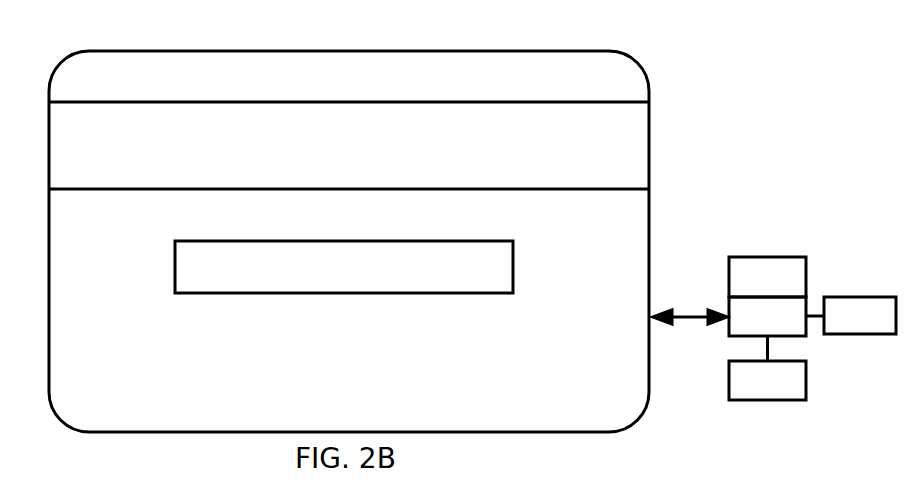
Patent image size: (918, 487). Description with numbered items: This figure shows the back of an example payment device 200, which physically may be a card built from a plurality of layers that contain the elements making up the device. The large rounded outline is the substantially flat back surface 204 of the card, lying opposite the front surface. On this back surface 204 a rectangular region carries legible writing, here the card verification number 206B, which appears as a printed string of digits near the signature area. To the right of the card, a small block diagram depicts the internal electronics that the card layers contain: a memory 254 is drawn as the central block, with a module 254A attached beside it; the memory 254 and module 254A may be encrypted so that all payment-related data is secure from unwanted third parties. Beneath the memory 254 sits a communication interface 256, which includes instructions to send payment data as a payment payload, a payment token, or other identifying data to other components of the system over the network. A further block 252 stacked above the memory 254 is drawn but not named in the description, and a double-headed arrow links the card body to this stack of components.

The payment device 200 is at (161, 55).
The back surface 204 is at (628, 229).
The card verification number 206B is at (482, 241).
The communication interface 252 is at (767, 277).
The memory 254 is at (776, 329).
The module 254A is at (860, 315).
The communication interface 256 is at (767, 380).